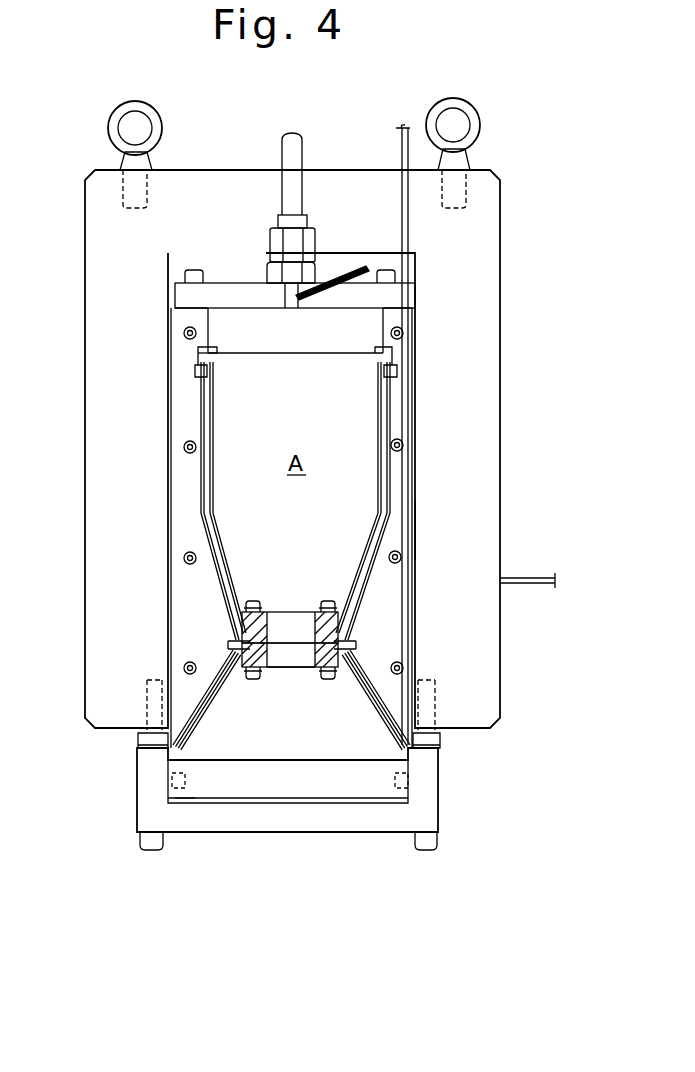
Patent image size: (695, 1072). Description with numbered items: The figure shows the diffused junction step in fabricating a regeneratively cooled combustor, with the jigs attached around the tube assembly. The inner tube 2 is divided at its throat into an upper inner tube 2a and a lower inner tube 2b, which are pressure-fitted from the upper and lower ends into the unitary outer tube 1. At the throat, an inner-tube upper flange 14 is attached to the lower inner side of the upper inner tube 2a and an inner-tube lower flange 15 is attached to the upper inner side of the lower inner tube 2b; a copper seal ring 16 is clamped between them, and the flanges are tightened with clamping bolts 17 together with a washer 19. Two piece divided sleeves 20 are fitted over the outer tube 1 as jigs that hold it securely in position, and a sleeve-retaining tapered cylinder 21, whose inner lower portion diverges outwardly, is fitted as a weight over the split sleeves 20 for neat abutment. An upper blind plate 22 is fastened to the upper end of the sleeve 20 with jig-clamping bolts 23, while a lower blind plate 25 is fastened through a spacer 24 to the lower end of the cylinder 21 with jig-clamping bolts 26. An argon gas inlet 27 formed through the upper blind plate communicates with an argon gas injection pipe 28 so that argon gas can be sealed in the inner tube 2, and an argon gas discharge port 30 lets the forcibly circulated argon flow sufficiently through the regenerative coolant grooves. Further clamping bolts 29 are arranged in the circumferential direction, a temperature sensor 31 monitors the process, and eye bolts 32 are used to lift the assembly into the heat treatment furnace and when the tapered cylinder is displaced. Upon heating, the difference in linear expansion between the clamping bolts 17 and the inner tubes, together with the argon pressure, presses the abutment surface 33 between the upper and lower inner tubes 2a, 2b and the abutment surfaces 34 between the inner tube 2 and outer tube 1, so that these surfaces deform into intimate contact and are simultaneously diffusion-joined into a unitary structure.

The outer tube 1 is at (392, 470).
The inner tube 2 is at (228, 497).
The upper inner tube 2a is at (380, 447).
The lower inner tube 2b is at (372, 715).
The inner-tube upper flange 14 is at (335, 615).
The inner-tube lower flange 15 is at (303, 670).
The copper seal ring 16 is at (252, 682).
The clamping bolts 17 is at (333, 607).
The washer 19 is at (322, 606).
The two piece divided sleeves 20 is at (395, 503).
The sleeve-retaining tapered cylinder 21 is at (465, 358).
The upper blind plate 22 is at (395, 297).
The jig-clamping bolts 23 is at (395, 277).
The spacer 24 is at (316, 790).
The lower blind plate 25 is at (377, 822).
The jig-clamping bolts 26 is at (437, 845).
The argon gas inlet 27 is at (290, 298).
The argon gas injection pipe 28 is at (305, 152).
The clamping bolts 29 is at (413, 537).
The argon gas discharge port 30 is at (440, 742).
The temperature sensor 31 is at (402, 232).
The eye bolts 32 is at (482, 127).
The abutment surface 33 is at (343, 642).
The abutment surfaces 34 is at (205, 536).